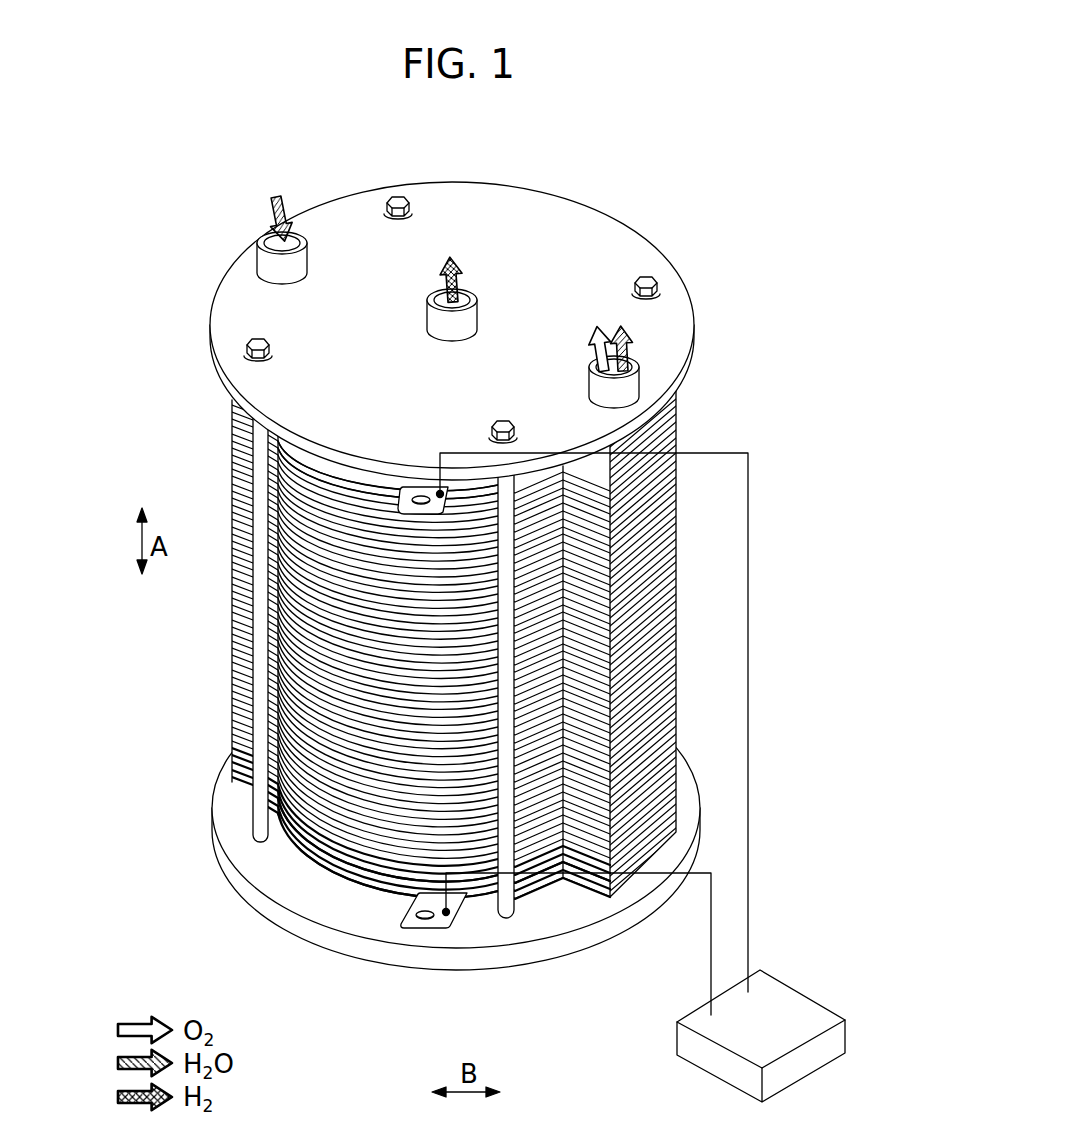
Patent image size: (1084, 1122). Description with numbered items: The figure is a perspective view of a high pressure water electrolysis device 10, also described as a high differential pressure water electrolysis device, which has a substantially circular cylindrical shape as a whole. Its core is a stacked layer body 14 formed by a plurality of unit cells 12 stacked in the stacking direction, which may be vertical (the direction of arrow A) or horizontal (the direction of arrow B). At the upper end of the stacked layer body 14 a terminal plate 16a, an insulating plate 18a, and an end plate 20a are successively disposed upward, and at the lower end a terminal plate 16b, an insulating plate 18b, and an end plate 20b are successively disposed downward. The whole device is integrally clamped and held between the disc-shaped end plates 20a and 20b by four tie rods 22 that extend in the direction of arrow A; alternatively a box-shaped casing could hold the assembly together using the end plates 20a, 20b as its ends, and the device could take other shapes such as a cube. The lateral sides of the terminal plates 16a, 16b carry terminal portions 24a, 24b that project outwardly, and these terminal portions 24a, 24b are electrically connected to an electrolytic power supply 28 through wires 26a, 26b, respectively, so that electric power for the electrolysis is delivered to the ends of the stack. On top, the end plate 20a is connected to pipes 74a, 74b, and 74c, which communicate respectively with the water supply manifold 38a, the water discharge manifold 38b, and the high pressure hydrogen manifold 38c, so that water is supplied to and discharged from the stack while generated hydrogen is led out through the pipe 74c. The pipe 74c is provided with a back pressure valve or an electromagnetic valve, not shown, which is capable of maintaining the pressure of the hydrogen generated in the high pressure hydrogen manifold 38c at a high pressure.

The high pressure water electrolysis device 10 is at (472, 146).
The unit cell 12 is at (275, 604).
The stacked layer body 14 is at (397, 622).
The terminal plate 16a is at (385, 487).
The terminal plate 16b is at (557, 884).
The insulating plate 18a is at (347, 468).
The insulating plate 18b is at (543, 897).
The end plate 20a is at (629, 223).
The end plate 20b is at (684, 750).
The tie rod 22 is at (513, 918).
The terminal portion 24a is at (417, 487).
The terminal portion 24b is at (432, 930).
The wire 26a is at (757, 932).
The wire 26b is at (710, 967).
The electrolytic power supply 28 is at (809, 1013).
The water supply manifold 38a is at (303, 262).
The water discharge manifold 38b is at (632, 389).
The high pressure hydrogen manifold 38c is at (474, 318).
The pipe 74a is at (342, 239).
The pipe 74b is at (704, 366).
The pipe 74c is at (503, 294).